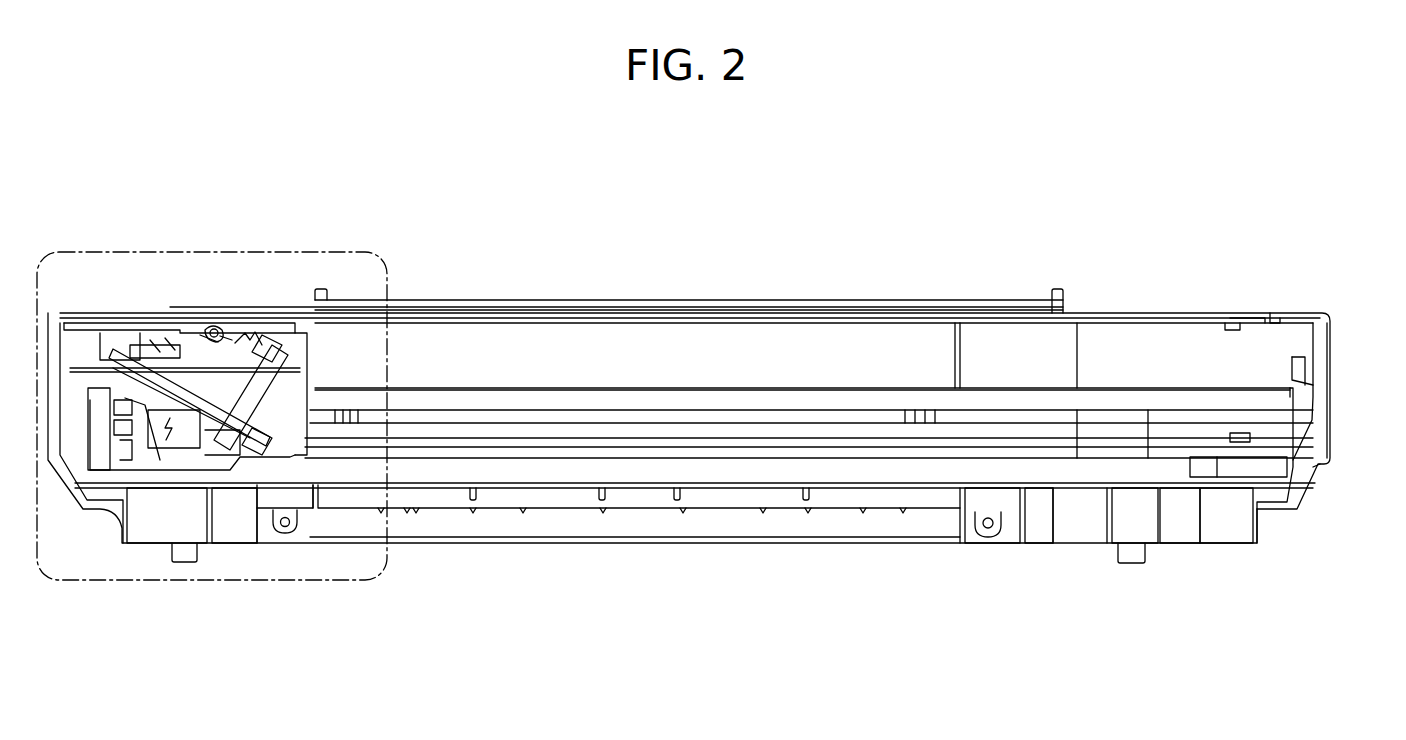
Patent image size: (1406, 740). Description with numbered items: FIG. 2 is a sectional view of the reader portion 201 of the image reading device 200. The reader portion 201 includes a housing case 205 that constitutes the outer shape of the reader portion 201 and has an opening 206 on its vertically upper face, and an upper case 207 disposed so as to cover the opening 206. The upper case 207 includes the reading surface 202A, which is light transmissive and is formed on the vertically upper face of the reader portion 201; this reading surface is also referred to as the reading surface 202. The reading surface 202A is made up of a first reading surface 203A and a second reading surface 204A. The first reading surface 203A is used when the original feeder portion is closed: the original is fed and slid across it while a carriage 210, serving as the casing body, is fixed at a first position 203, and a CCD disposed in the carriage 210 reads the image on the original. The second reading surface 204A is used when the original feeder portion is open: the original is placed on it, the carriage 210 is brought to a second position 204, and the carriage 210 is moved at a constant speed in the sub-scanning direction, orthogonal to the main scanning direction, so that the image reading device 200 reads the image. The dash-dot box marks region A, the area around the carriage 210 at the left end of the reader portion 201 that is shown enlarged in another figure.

The image reading device 200 is at (1157, 233).
The reader portion 201 is at (1225, 252).
The reading surface 202 is at (885, 344).
The reading surface 202A is at (767, 305).
The first position 203 is at (237, 327).
The first reading surface 203A is at (212, 327).
The second position 204 is at (590, 347).
The second reading surface 204A is at (653, 300).
The housing case 205 is at (1333, 440).
The opening 206 is at (1250, 341).
The upper case 207 is at (1294, 312).
The carriage 210 is at (132, 322).
The region A is at (120, 580).